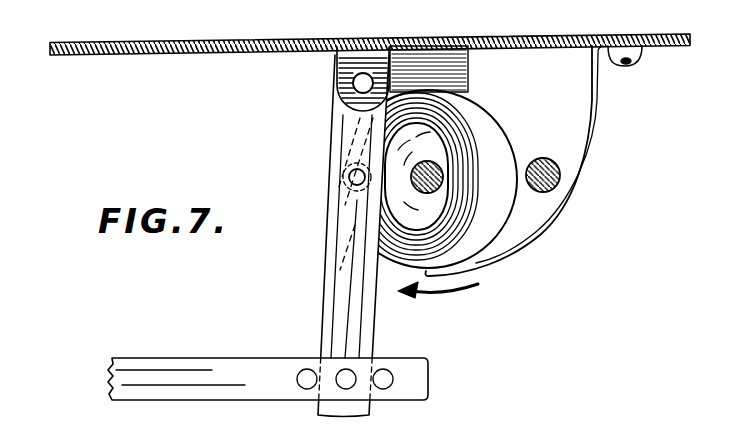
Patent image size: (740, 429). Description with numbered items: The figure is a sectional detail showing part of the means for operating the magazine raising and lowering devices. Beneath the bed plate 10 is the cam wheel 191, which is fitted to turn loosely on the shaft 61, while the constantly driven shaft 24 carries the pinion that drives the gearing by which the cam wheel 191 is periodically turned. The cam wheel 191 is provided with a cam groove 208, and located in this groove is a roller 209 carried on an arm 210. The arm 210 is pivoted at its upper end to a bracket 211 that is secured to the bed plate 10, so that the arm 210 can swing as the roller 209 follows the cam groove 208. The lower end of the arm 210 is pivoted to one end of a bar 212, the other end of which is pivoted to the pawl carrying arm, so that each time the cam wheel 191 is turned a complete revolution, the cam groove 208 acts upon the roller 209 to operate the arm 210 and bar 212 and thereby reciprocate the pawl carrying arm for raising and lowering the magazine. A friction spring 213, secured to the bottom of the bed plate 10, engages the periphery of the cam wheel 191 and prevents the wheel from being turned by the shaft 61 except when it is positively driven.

The bed plate 10 is at (257, 42).
The bracket 211 is at (339, 89).
The roller 209 is at (344, 181).
The shaft 61 is at (412, 185).
The cam wheel 191 is at (484, 106).
The cam groove 208 is at (465, 142).
The constantly driven shaft 24 is at (549, 158).
The friction spring 213 is at (534, 232).
The bar 212 is at (188, 361).
The arm 210 is at (322, 313).